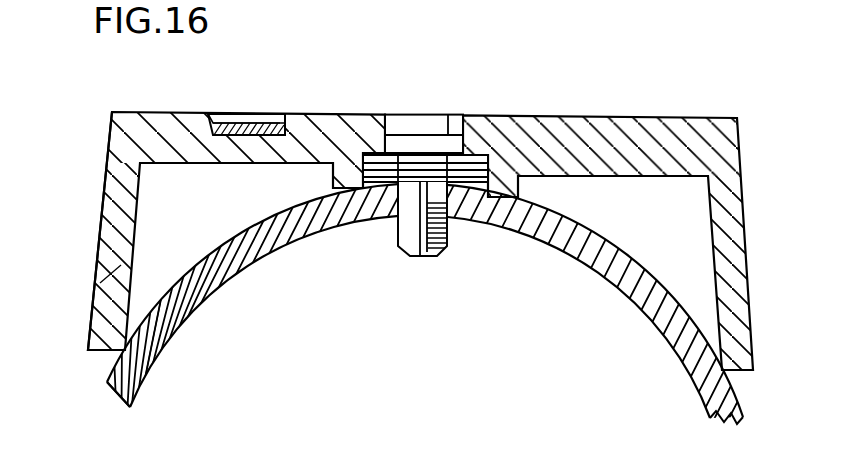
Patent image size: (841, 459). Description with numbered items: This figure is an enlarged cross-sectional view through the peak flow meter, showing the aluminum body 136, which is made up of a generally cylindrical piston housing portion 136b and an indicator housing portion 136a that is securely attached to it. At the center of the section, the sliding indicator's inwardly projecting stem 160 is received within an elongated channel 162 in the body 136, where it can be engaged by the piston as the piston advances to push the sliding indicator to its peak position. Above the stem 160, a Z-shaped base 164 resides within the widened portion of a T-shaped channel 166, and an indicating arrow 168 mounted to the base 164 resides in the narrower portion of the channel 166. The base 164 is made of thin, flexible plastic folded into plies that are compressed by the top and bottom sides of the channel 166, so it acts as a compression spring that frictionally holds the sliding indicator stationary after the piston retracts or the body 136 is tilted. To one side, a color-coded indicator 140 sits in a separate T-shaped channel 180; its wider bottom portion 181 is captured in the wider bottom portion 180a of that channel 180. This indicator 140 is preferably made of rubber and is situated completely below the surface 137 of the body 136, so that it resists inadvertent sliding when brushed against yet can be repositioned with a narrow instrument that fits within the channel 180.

The body 136 is at (254, 248).
The indicator housing portion 136a is at (120, 267).
The piston housing portion 136b is at (162, 330).
The surface 137 is at (165, 80).
The color-coded indicator 140 is at (288, 113).
The stem 160 is at (410, 240).
The elongated channel 162 is at (471, 192).
The Z-shaped base 164 is at (476, 166).
The T-shaped channel 166 is at (491, 178).
The indicating arrow 168 is at (420, 125).
The T-shaped channel 180 is at (254, 114).
The wider bottom portion 180a is at (232, 114).
The wider bottom portion 181 is at (243, 136).